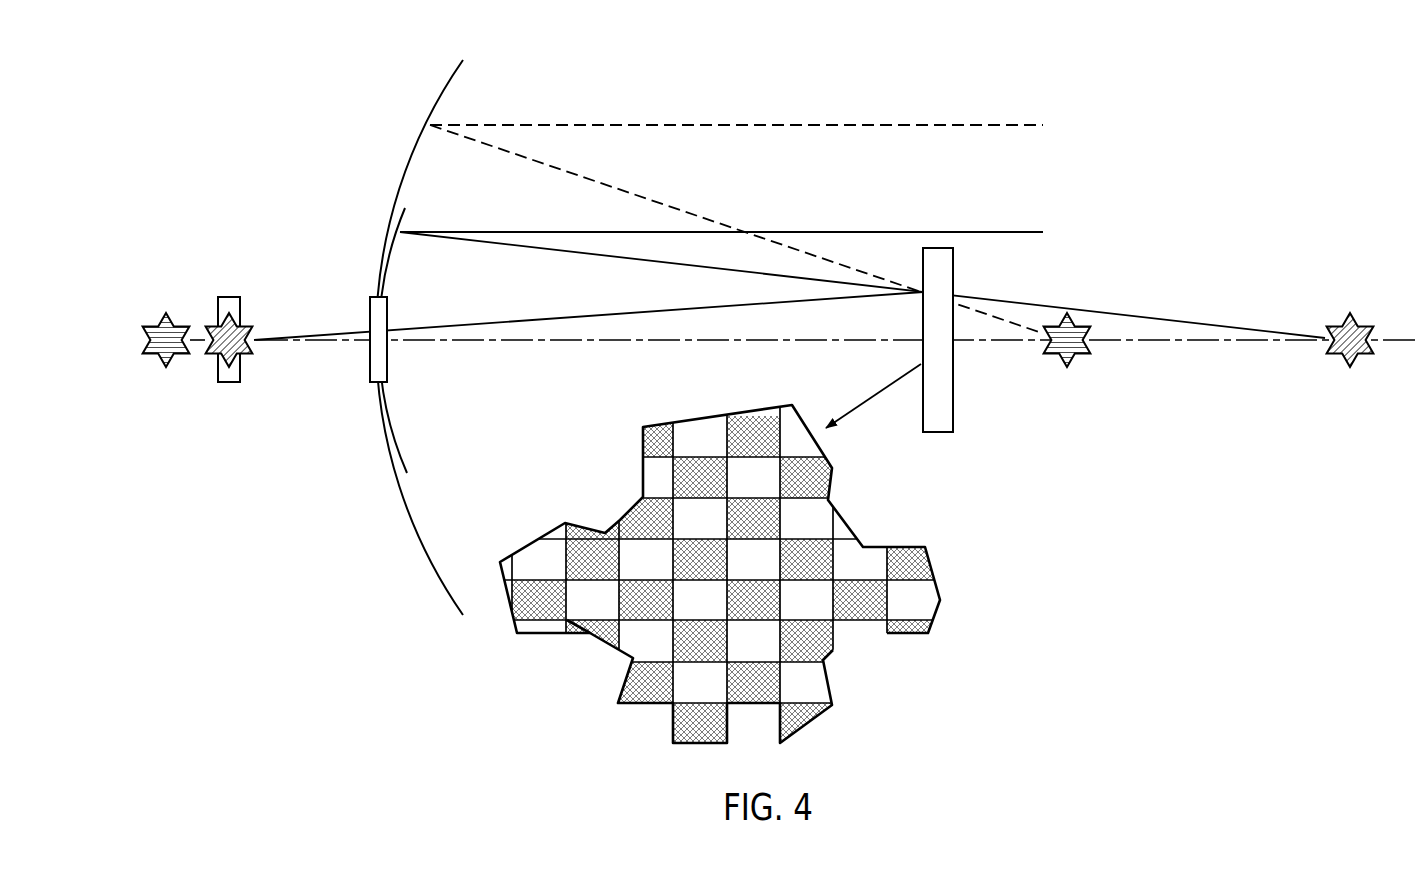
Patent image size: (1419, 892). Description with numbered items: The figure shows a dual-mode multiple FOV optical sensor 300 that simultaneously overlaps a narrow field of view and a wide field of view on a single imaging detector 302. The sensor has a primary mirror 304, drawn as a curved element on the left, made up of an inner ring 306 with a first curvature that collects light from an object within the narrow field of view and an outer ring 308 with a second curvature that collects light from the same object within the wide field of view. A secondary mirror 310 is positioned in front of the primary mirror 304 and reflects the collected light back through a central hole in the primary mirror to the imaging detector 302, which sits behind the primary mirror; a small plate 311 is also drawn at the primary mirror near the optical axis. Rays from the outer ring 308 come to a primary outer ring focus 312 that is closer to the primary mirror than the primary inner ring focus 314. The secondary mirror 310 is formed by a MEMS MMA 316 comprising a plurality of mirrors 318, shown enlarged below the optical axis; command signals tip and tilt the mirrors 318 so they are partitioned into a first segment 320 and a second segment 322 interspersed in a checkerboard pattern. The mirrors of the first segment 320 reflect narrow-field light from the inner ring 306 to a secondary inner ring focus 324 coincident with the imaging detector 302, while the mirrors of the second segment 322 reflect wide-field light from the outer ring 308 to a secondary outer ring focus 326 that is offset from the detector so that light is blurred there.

The dual-mode multiple FOV optical sensor 300 is at (1226, 80).
The imaging detector 302 is at (231, 297).
The primary mirror 304 is at (410, 337).
The inner ring 306 is at (393, 262).
The outer ring 308 is at (448, 90).
The secondary mirror 310 is at (954, 267).
The corrector plate 311 is at (388, 362).
The primary outer ring focus 312 is at (1079, 355).
The primary inner ring focus 314 is at (1363, 353).
The MEMS MMA 316 is at (725, 562).
The mirrors 318 is at (826, 511).
The first segment 320 is at (645, 598).
The second segment 322 is at (807, 598).
The secondary inner ring focus 324 is at (244, 356).
The secondary outer ring focus 326 is at (158, 356).